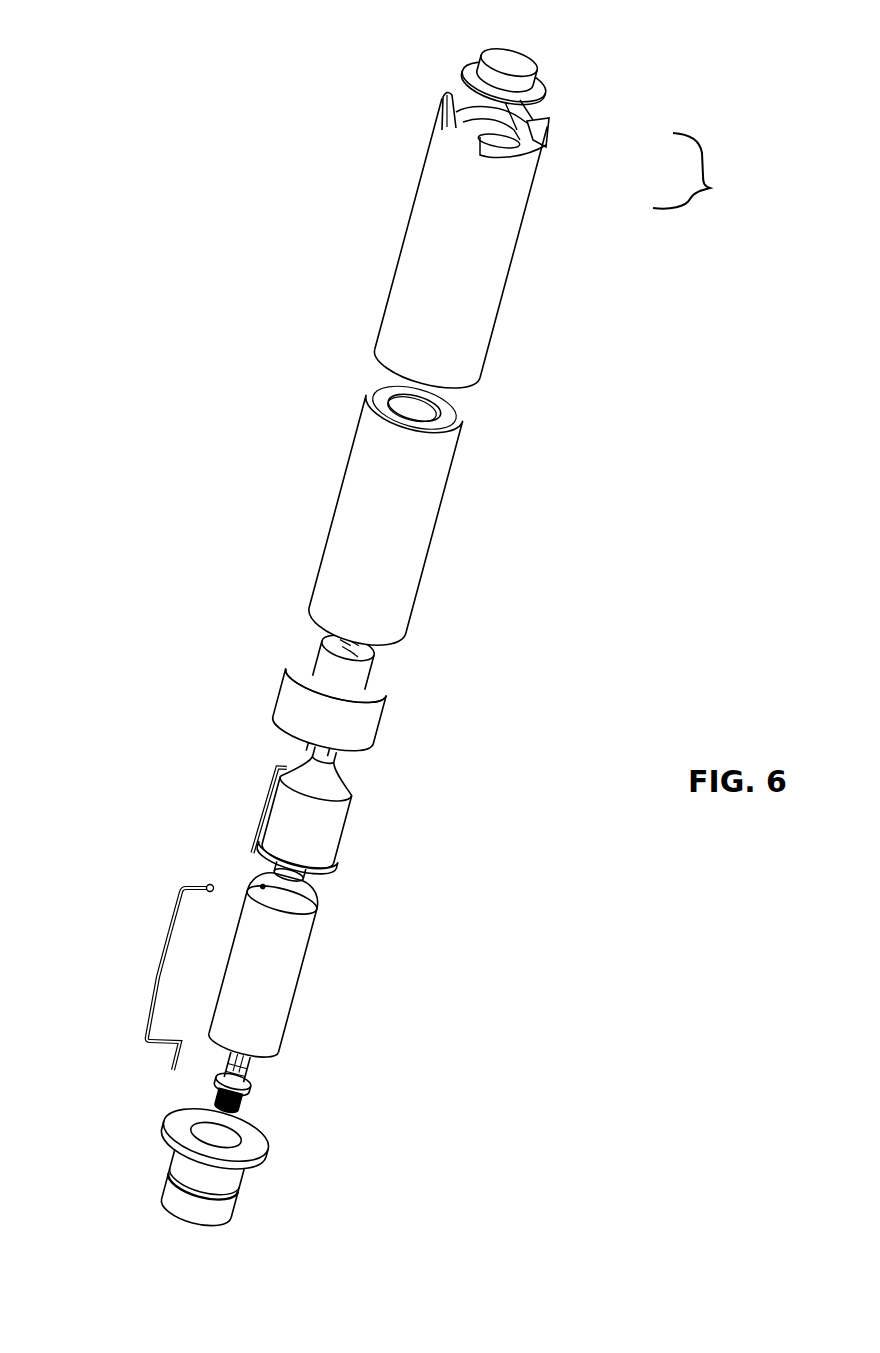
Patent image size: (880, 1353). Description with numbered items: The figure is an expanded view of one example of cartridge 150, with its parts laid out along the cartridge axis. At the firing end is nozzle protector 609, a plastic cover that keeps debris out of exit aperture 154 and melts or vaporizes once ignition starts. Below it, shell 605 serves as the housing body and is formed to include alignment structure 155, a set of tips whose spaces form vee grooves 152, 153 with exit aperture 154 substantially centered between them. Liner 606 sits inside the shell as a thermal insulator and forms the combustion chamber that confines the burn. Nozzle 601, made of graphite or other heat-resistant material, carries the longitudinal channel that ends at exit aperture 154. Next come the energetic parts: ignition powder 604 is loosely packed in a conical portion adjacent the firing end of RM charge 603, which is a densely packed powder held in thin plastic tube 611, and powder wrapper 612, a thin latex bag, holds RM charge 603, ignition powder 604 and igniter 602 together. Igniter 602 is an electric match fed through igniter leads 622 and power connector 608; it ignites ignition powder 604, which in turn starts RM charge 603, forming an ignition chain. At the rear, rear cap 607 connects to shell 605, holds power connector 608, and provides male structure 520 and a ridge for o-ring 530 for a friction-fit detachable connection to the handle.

The cartridge 150 is at (214, 281).
The vee groove 152 is at (448, 116).
The vee groove 153 is at (524, 118).
The exit aperture 154 is at (360, 645).
The alignment structure 155 is at (698, 172).
The male structure 520 is at (201, 1191).
The o-ring 530 is at (202, 1187).
The nozzle 601 is at (368, 728).
The igniter 602 is at (203, 884).
The reactive material charge 603 is at (328, 959).
The ignition powder 604 is at (292, 893).
The shell 605 is at (474, 290).
The liner 606 is at (415, 522).
The rear cap 607 is at (213, 1168).
The power connector 608 is at (234, 1082).
The nozzle protector 609 is at (516, 60).
The tube 611 is at (268, 1000).
The powder wrapper 612 is at (318, 818).
The igniter leads 622 is at (158, 978).